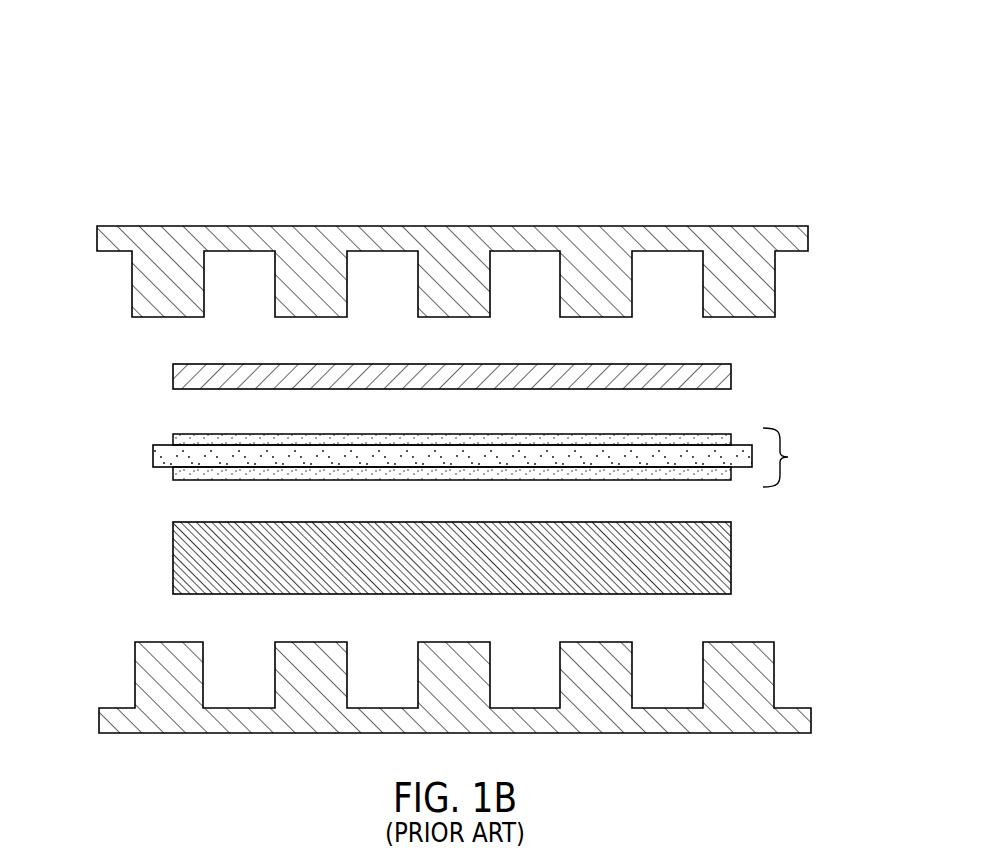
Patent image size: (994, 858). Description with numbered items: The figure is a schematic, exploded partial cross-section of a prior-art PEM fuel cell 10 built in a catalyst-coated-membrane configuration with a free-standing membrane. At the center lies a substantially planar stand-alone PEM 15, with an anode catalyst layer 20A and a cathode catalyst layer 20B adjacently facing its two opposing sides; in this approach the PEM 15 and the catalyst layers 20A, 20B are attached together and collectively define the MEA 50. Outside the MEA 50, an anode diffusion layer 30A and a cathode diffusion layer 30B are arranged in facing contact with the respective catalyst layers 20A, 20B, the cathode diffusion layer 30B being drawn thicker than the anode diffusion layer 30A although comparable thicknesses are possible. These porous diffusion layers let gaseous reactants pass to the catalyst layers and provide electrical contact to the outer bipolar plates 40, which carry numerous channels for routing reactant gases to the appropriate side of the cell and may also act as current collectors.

The PEM fuel cell 10 is at (724, 52).
The bipolar plates 40 is at (97, 241).
The anode diffusion layer 30A is at (173, 379).
The cathode diffusion layer 30B is at (173, 559).
The anode catalyst layer 20A is at (173, 438).
The cathode catalyst layer 20B is at (173, 477).
The stand-alone PEM 15 is at (153, 460).
The MEA 50 is at (795, 457).